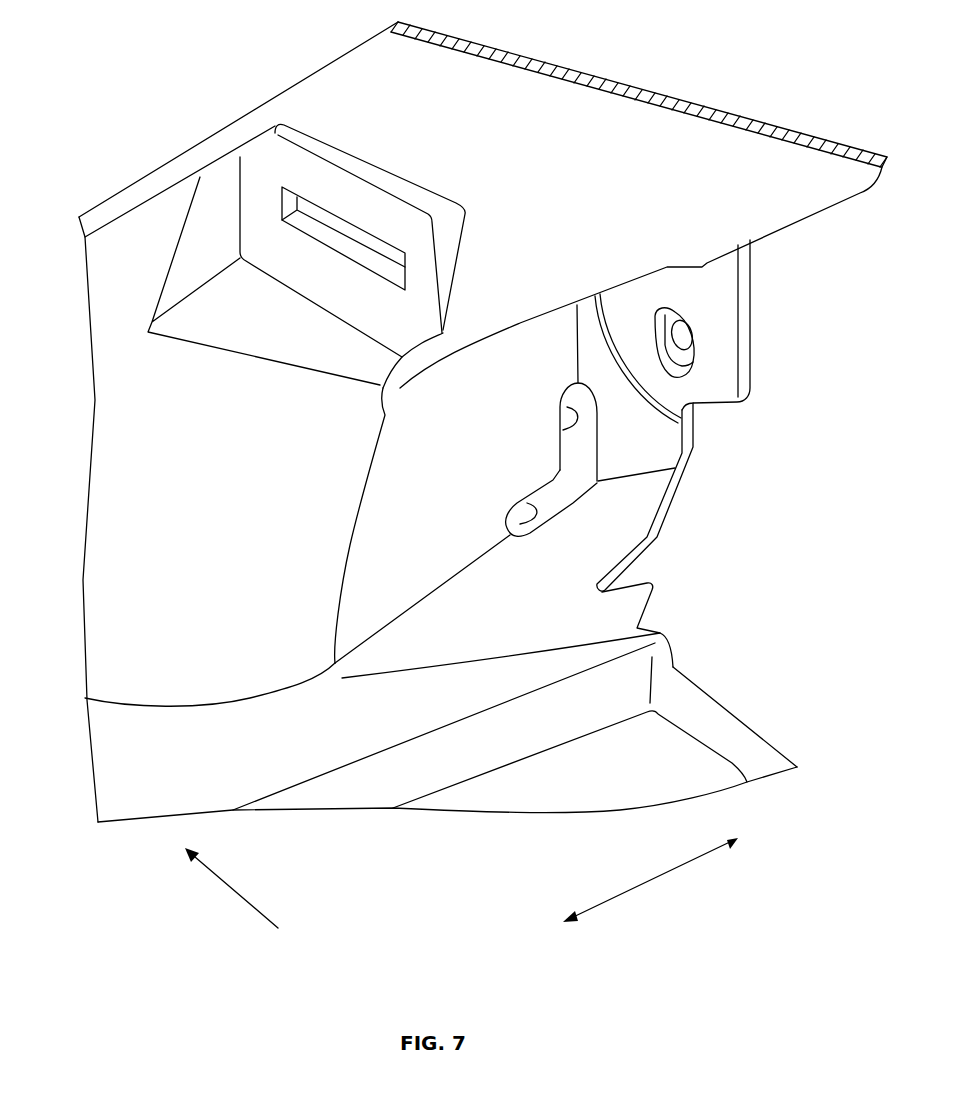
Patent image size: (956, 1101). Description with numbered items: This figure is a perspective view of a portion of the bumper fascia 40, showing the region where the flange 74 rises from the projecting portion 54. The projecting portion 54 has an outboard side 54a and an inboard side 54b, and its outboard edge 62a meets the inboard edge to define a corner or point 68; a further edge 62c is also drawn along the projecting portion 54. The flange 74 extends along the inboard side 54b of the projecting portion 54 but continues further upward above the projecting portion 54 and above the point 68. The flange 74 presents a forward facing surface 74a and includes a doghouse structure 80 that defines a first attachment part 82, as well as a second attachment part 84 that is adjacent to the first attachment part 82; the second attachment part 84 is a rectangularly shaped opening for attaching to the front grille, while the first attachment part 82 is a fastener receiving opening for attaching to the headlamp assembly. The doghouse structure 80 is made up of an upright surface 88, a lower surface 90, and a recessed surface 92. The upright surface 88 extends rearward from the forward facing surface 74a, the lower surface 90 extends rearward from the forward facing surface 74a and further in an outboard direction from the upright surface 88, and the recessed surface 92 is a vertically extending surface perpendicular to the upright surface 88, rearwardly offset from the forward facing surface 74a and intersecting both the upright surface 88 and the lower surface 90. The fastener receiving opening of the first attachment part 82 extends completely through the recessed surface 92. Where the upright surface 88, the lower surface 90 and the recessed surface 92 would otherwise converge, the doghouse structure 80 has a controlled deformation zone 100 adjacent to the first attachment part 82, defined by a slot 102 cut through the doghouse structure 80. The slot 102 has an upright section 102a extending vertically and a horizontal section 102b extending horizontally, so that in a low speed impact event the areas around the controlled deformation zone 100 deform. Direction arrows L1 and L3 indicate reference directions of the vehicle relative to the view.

The vehicle body panel assembly 40 is at (756, 73).
The flange 74 is at (157, 530).
The forward facing surface 74a is at (143, 413).
The second attachment part 84 is at (332, 240).
The upright surface 88 is at (414, 563).
The recessed surface 92 is at (718, 355).
The first attachment part 82 is at (685, 325).
The doghouse structure 80 is at (682, 504).
The lower surface 90 is at (598, 545).
The controlled deformation zone 100 is at (503, 475).
The slot 102 is at (583, 497).
The upright section 102a is at (568, 402).
The horizontal section 102b is at (515, 512).
The point 68 is at (653, 710).
The projecting portion 54 is at (650, 768).
The outboard side 54a is at (715, 718).
The inboard side 54b is at (490, 747).
The ledge 62c is at (433, 790).
The outboard edge 62a is at (733, 765).
The longitudinal direction L1 is at (645, 883).
The transverse direction L3 is at (233, 890).